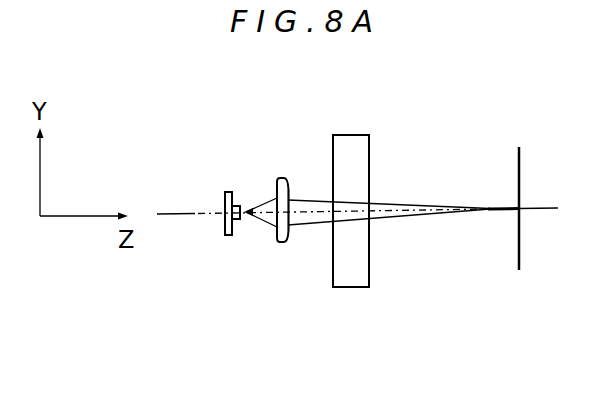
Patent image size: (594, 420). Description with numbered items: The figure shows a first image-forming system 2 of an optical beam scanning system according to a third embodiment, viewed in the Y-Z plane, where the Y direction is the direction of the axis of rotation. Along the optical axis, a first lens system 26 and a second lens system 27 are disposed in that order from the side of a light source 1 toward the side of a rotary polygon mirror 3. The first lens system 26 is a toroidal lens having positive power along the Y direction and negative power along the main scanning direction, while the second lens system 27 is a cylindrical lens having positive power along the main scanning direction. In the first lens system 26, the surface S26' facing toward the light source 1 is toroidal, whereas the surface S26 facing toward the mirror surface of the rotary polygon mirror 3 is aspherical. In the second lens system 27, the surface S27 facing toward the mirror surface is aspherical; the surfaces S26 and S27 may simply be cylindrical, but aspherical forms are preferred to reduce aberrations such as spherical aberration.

The light source 1 is at (224, 195).
The first image-forming system 2 is at (445, 152).
The rotary polygon mirror 3 is at (519, 157).
The first lens system 26 is at (280, 177).
The second lens system 27 is at (350, 141).
The surface facing toward the light source S26' is at (251, 235).
The surface facing toward the mirror surface S26 is at (302, 245).
The surface facing toward the mirror surface S27 is at (371, 251).